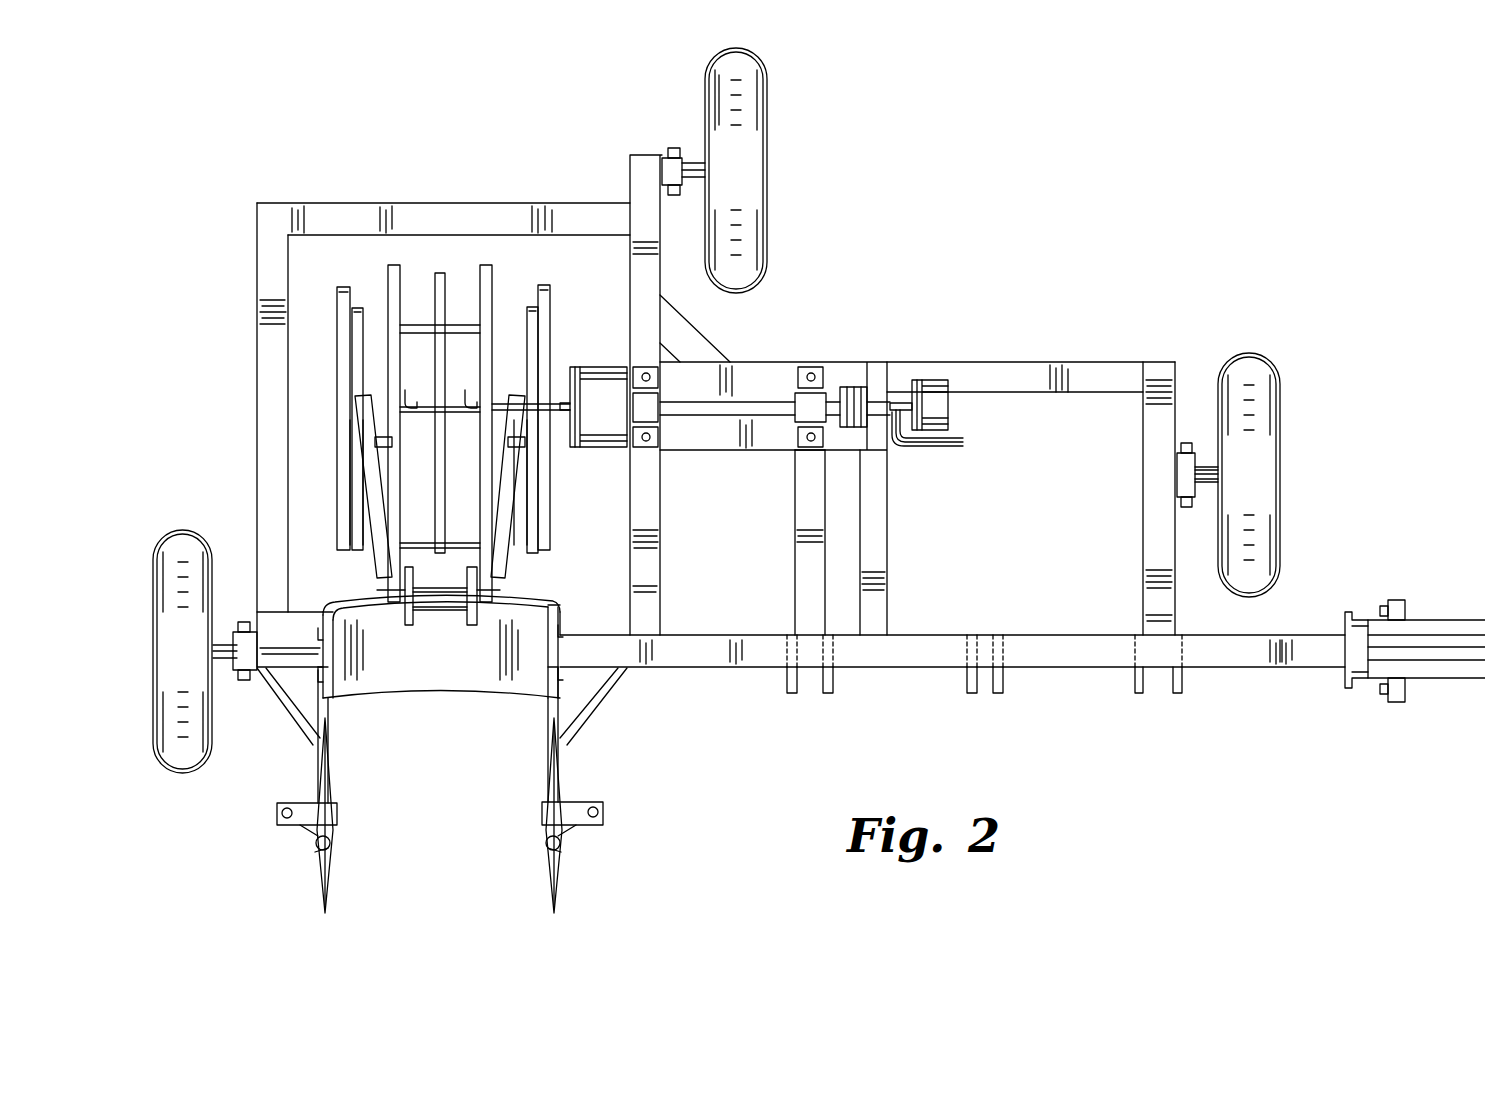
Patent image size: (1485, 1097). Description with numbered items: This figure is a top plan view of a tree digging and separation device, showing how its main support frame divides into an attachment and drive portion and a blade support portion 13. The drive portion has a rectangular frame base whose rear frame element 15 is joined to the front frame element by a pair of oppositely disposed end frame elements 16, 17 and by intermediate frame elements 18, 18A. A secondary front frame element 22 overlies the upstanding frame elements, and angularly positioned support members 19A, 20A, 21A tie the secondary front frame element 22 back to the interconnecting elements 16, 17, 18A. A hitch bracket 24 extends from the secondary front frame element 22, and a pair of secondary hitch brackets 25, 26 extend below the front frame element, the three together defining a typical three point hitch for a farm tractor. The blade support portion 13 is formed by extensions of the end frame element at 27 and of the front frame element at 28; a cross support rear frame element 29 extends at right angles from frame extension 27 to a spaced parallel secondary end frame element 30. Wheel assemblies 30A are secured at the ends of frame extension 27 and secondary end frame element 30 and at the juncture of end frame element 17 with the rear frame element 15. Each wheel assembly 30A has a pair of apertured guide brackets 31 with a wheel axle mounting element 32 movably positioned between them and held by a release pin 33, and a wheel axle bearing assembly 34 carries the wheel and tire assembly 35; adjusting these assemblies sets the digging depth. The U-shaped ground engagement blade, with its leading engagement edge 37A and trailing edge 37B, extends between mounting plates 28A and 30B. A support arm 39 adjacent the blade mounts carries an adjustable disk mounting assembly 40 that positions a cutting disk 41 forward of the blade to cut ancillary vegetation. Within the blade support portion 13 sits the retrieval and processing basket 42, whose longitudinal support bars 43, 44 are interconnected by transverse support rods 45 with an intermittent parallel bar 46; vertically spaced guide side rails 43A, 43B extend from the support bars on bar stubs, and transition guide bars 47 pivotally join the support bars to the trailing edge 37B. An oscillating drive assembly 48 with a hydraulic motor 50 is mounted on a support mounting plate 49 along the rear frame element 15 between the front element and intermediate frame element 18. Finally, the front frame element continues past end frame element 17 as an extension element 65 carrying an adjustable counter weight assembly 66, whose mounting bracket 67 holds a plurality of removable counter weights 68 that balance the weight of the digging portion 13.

The blade support portion 13 is at (404, 392).
The rear frame element 15 is at (1048, 467).
The end frame element 16 is at (650, 460).
The end frame element 17 is at (1163, 383).
The intermediate frame element 18 is at (773, 465).
The intermediate frame element 18A is at (880, 532).
The angularly positioned support member 19A is at (650, 592).
The angularly positioned support member 20A is at (813, 612).
The angularly positioned support member 21A is at (1150, 613).
The secondary front frame element 22 is at (923, 650).
The hitch bracket 24 is at (1005, 690).
The secondary hitch bracket 25 is at (790, 690).
The secondary hitch bracket 26 is at (1180, 690).
The frame extension 27 is at (665, 338).
The frame element extension 28 is at (590, 652).
The mounting plate 28A is at (567, 610).
The cross support rear frame element 29 is at (515, 215).
The secondary end frame element 30 is at (275, 300).
The wheel assembly 30A is at (783, 431).
The mounting plate 30B is at (340, 667).
The guide bracket 31 is at (690, 165).
The wheel axle mounting element 32 is at (1185, 475).
The release pin 33 is at (670, 148).
The wheel axle bearing assembly 34 is at (1210, 467).
The wheel and tire assembly 35 is at (740, 190).
The leading engagement edge 37A is at (406, 700).
The trailing edge 37B is at (532, 590).
The support arm 39 is at (567, 783).
The adjustable disk mounting assembly 40 is at (584, 846).
The cutting disk 41 is at (332, 883).
The retrieval and processing basket 42 is at (384, 361).
The support bar 43 is at (392, 280).
The guide side rail 43A is at (335, 345).
The guide side rail 43B is at (365, 452).
The support bar 44 is at (488, 265).
The support rod 45 is at (376, 432).
The intermittent parallel bar 46 is at (439, 275).
The transition guide bar 47 is at (445, 652).
The oscillating drive assembly 48 is at (824, 344).
The support mounting plate 49 is at (778, 383).
The hydraulic motor 50 is at (932, 405).
The extension element 65 is at (1302, 648).
The adjustable counter weight assembly 66 is at (1385, 648).
The mounting bracket 67 is at (1365, 690).
The counter weight 68 is at (1447, 670).